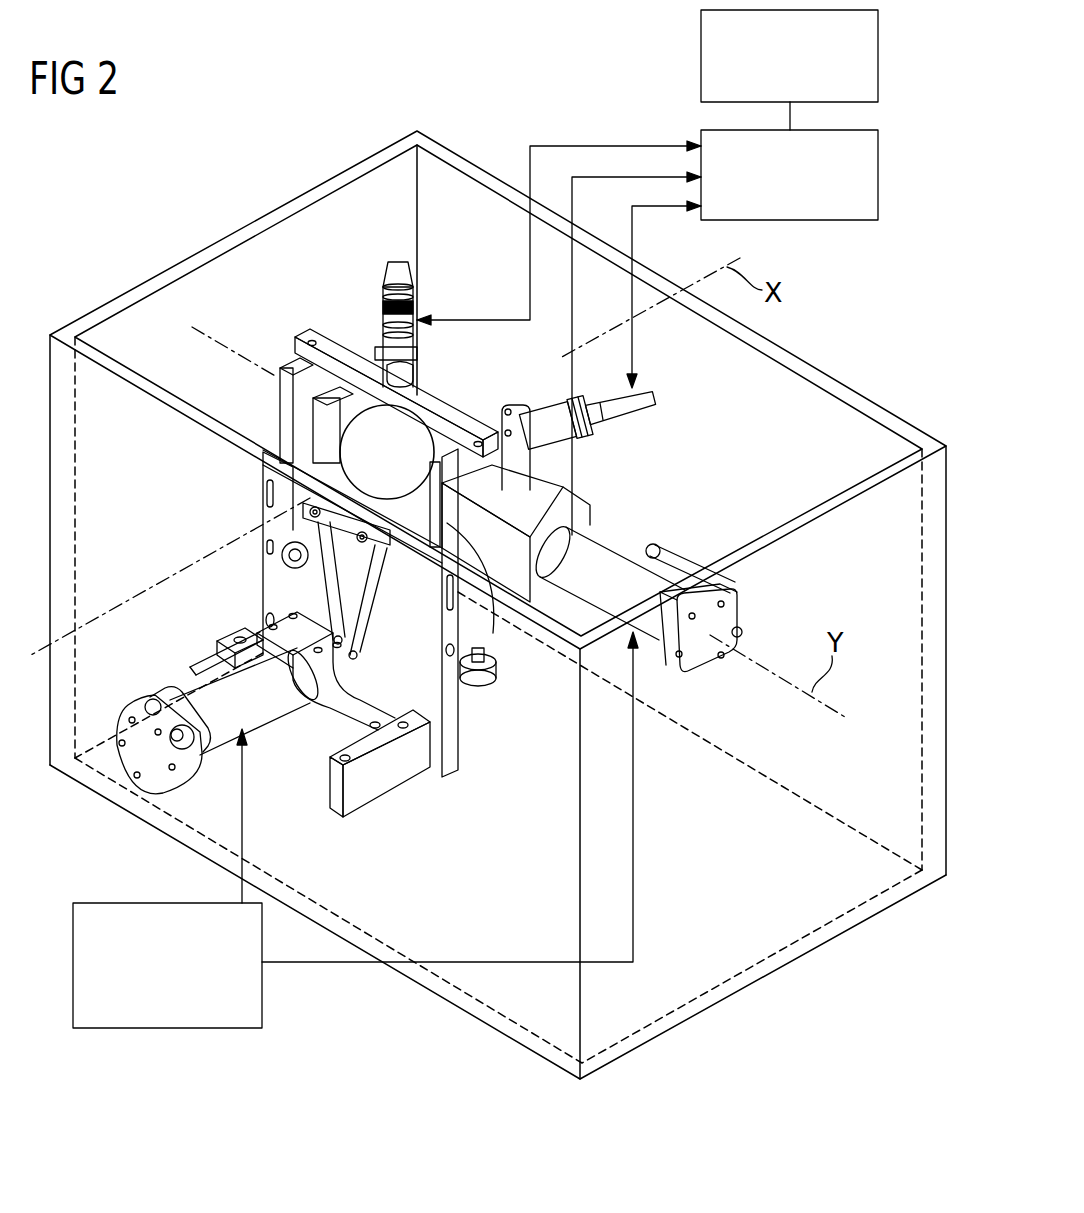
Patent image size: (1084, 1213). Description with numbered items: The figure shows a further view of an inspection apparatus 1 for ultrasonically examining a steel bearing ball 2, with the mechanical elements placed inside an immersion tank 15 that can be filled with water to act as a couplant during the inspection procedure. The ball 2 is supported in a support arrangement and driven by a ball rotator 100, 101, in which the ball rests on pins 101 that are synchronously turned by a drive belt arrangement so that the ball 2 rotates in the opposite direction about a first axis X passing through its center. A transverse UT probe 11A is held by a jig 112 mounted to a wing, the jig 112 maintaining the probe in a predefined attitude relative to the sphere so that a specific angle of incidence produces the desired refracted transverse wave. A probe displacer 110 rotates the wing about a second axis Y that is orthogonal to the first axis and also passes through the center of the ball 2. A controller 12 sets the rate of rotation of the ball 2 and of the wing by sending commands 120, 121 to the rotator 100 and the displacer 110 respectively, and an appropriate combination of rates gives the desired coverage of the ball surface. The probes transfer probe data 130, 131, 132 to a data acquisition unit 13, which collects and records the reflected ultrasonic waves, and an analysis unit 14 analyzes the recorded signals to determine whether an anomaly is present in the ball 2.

The inspection apparatus 1 is at (216, 171).
The steel bearing ball 2 is at (382, 430).
The transverse UT probe 11A is at (385, 280).
The controller 12 is at (127, 903).
The data acquisition unit 13 is at (878, 170).
The analysis unit 14 is at (878, 47).
The immersion tank 15 is at (859, 393).
The ball rotator 100 is at (250, 722).
The pins 101 is at (490, 655).
The probe displacer 110 is at (707, 662).
The jig 112 is at (500, 400).
The command 120 is at (242, 822).
The command 121 is at (633, 880).
The probe data 130 is at (530, 236).
The probe data 131 is at (632, 342).
The probe data 132 is at (572, 275).